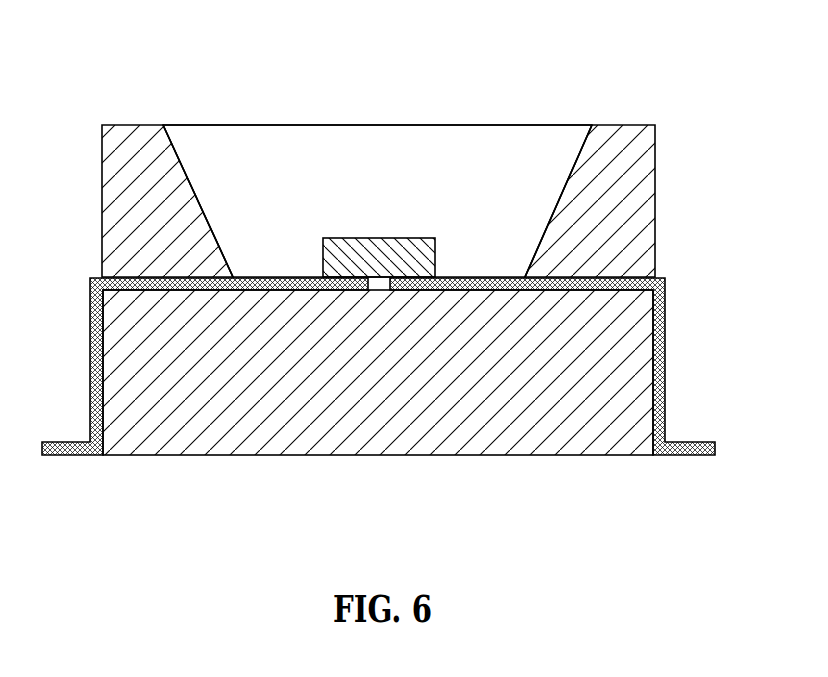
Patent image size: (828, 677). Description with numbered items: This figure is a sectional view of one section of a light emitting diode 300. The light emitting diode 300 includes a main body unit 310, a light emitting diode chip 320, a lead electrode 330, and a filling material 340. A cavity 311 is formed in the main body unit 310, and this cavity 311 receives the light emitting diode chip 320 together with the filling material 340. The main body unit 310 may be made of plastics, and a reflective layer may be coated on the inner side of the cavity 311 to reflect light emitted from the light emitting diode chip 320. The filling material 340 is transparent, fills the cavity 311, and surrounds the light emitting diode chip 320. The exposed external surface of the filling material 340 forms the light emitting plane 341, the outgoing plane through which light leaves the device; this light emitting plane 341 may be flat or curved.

The light emitting diode 300 is at (195, 42).
The main body unit 310 is at (640, 209).
The cavity 311 is at (515, 194).
The light emitting diode chip 320 is at (377, 238).
The lead electrode 330 is at (63, 456).
The filling material 340 is at (455, 148).
The light emitting plane 341 is at (280, 125).